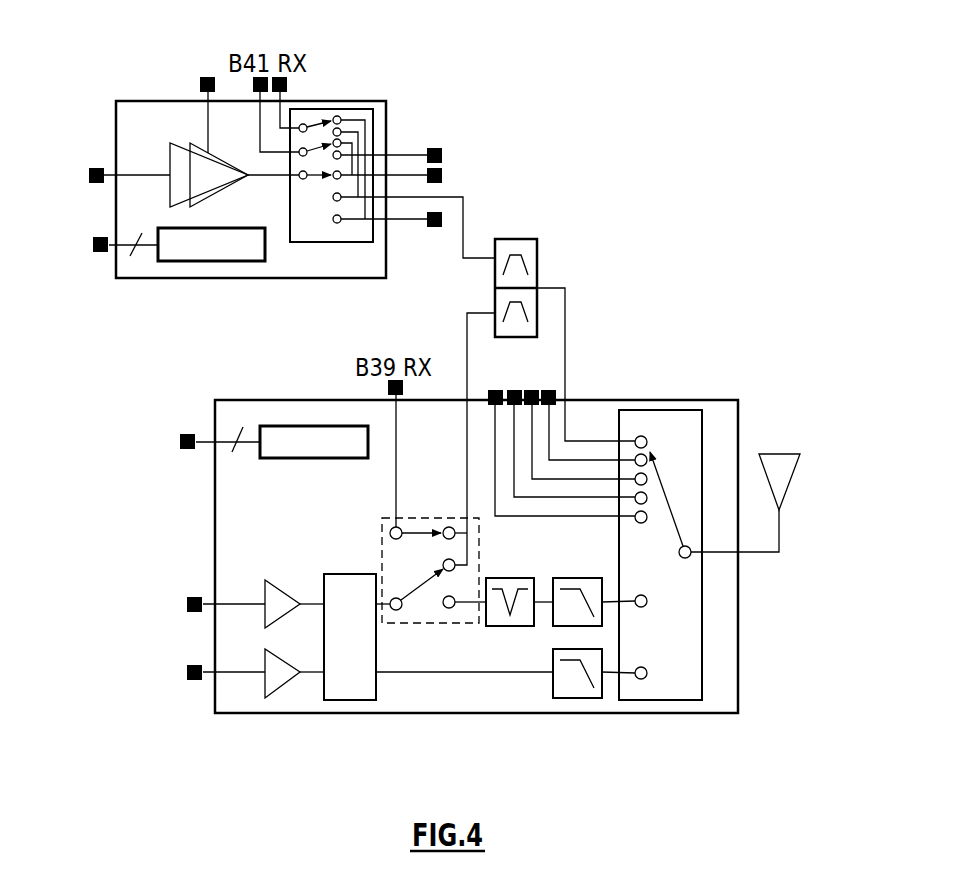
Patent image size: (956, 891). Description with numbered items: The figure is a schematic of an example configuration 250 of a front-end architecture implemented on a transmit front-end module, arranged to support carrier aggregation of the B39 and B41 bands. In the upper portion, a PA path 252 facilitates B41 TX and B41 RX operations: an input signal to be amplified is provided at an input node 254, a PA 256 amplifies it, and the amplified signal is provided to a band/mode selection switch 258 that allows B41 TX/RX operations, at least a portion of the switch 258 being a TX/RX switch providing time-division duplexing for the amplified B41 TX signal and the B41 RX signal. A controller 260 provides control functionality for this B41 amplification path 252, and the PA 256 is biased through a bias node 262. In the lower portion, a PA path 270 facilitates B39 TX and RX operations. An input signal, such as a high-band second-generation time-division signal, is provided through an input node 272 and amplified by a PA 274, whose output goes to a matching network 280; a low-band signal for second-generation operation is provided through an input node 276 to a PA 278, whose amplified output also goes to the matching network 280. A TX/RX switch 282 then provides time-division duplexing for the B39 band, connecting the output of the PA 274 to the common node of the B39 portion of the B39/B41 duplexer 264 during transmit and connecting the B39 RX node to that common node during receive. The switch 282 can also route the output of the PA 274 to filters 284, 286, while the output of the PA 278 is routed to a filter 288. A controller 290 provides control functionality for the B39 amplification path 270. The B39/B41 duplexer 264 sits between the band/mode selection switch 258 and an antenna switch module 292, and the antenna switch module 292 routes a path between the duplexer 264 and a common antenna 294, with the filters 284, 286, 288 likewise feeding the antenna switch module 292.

The configuration 250 is at (482, 66).
The PA path 252 is at (140, 101).
The input node 254 is at (96, 167).
The PA 256 is at (184, 140).
The band/mode selection switch 258 is at (368, 243).
The controller 260 is at (212, 228).
The bias node 262 is at (202, 80).
The B39/B41 duplexer 264 is at (548, 270).
The PA path 270 is at (234, 400).
The input node 272 is at (187, 610).
The PA 274 is at (288, 580).
The input node 276 is at (187, 678).
The PA 278 is at (292, 694).
The matching network 280 is at (363, 574).
The TX/RX switch 282 is at (430, 624).
The filter 284 is at (500, 578).
The filter 286 is at (590, 578).
The filter 288 is at (575, 698).
The controller 290 is at (327, 458).
The antenna switch module 292 is at (703, 437).
The common antenna 294 is at (787, 495).